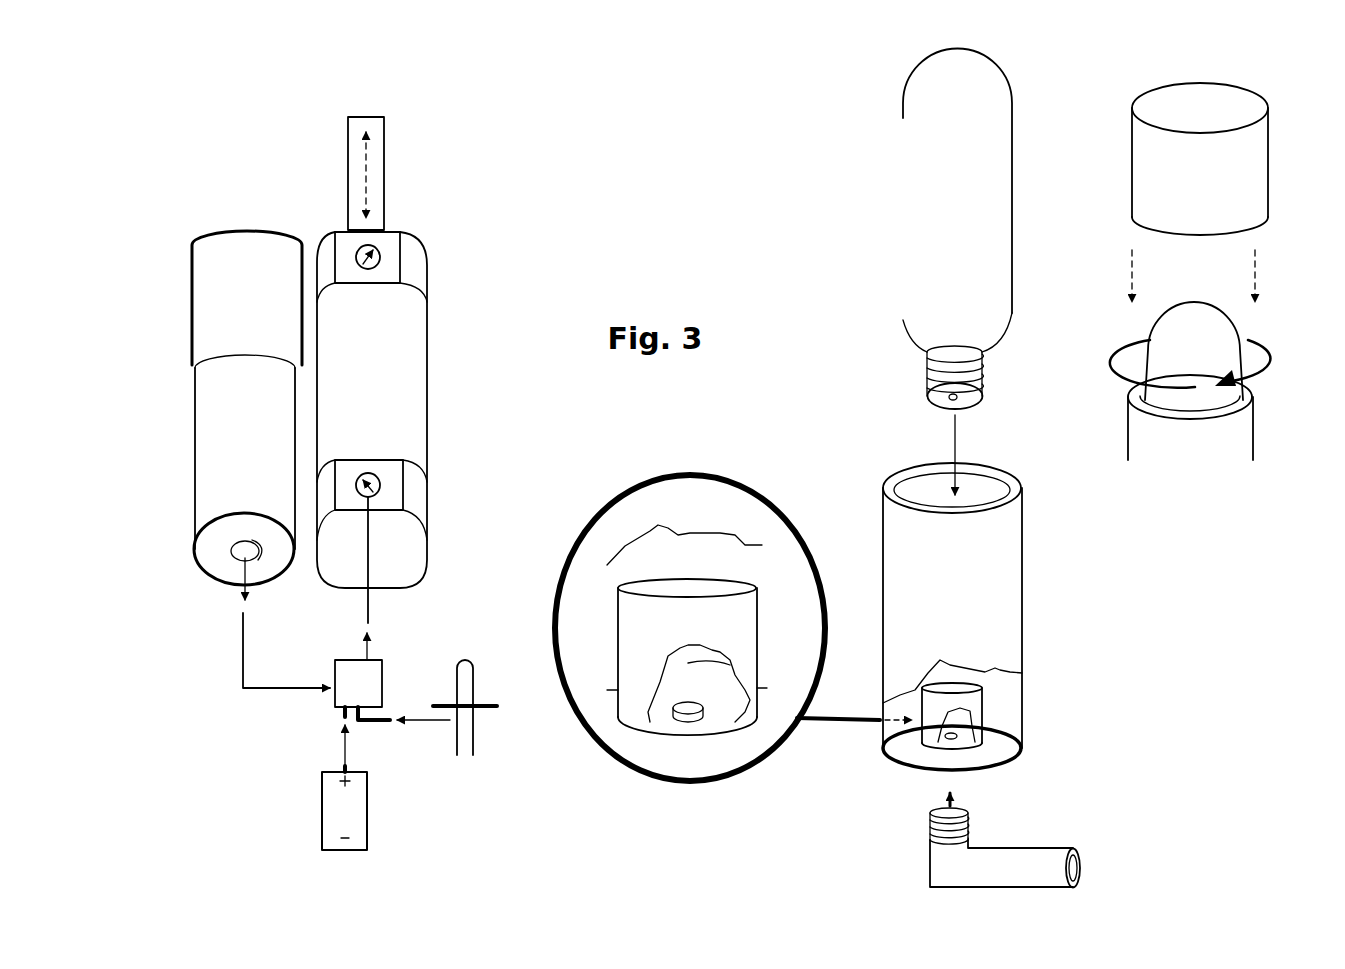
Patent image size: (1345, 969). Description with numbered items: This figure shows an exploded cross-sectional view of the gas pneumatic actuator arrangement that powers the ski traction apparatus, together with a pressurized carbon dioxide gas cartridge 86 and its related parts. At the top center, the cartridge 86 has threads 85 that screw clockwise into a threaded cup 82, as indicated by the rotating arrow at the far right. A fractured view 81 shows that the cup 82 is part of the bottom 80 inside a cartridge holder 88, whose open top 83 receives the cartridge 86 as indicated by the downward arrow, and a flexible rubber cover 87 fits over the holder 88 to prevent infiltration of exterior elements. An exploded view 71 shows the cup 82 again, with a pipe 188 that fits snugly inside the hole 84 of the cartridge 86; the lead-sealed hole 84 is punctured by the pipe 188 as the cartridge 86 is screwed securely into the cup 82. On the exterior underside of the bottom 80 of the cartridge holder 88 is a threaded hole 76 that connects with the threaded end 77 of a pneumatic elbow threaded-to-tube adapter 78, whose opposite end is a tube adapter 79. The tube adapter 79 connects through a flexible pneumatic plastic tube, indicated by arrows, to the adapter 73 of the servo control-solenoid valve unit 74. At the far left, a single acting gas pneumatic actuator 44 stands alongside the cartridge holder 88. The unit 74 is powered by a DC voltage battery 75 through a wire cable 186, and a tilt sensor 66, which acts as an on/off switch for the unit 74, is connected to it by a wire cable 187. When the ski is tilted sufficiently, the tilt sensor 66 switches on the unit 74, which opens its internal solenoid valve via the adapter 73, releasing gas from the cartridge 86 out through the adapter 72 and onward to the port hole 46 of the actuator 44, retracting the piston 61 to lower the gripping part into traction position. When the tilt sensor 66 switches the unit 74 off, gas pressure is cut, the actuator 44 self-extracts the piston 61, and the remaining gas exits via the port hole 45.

The piston 61 is at (352, 160).
The flexible rubber cover 87 is at (212, 255).
The cartridge holder 88 is at (306, 540).
The threaded hole 76 is at (246, 560).
The single acting gas pneumatic actuator 44 is at (415, 372).
The port hole 45 is at (377, 270).
The port hole 46 is at (378, 470).
The servo control-solenoid valve unit 74 is at (358, 683).
The adapter 72 is at (372, 652).
The adapter 73 is at (330, 686).
The wire cable 186 is at (328, 717).
The wire cable 187 is at (381, 730).
The DC voltage battery 75 is at (362, 803).
The tilt sensor 66 is at (470, 692).
The exploded view 71 is at (572, 637).
The pipe 188 is at (712, 712).
The pressurized carbon dioxide gas cartridge 86 is at (1155, 335).
The threads 85 is at (990, 388).
The hole 84 is at (965, 400).
The container 83 is at (898, 472).
The bottom 80 is at (1008, 768).
The cup 82 is at (959, 682).
The fractured view 81 is at (920, 667).
The threaded end 77 is at (928, 817).
The pneumatic elbow threaded-to-tube adapter 78 is at (985, 860).
The tube adapter 79 is at (1086, 866).